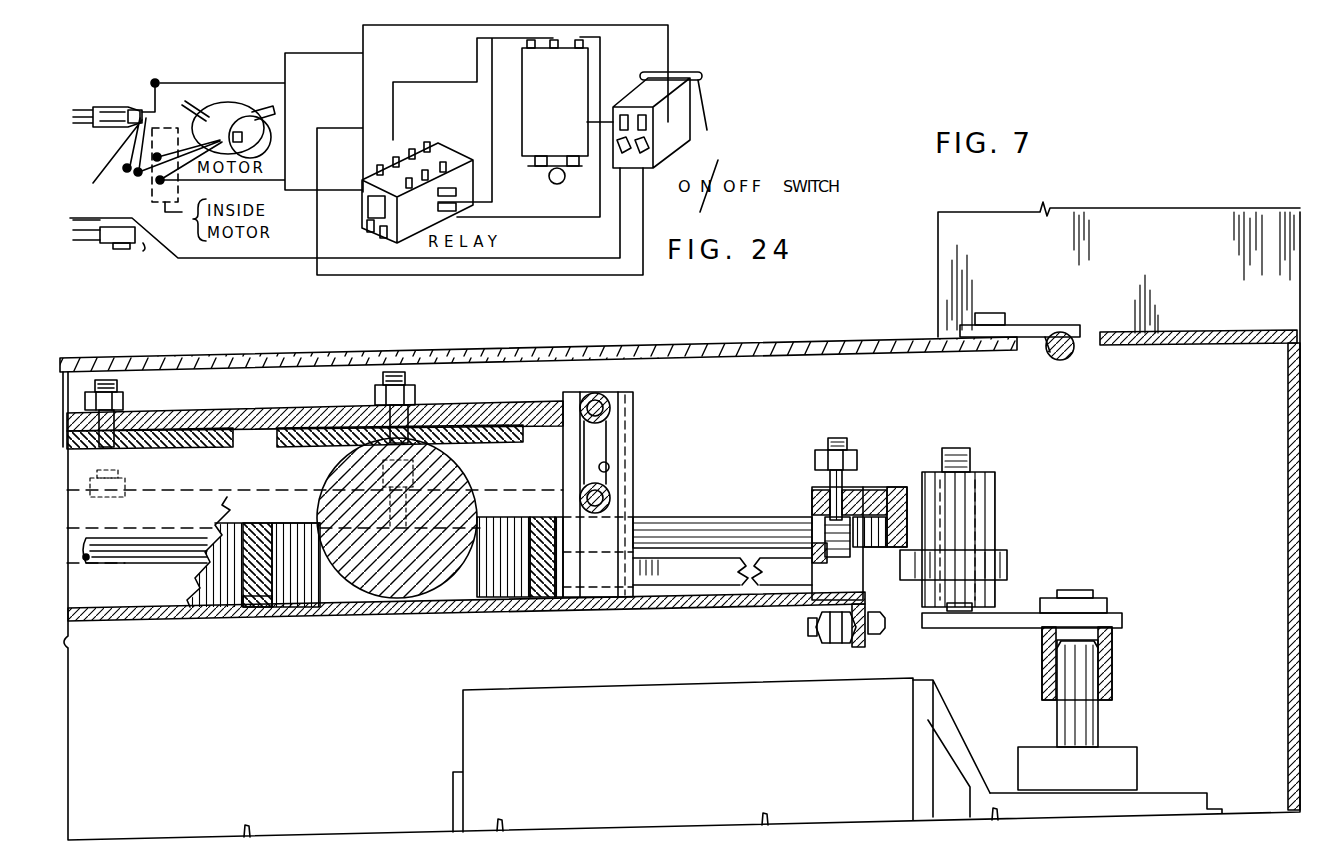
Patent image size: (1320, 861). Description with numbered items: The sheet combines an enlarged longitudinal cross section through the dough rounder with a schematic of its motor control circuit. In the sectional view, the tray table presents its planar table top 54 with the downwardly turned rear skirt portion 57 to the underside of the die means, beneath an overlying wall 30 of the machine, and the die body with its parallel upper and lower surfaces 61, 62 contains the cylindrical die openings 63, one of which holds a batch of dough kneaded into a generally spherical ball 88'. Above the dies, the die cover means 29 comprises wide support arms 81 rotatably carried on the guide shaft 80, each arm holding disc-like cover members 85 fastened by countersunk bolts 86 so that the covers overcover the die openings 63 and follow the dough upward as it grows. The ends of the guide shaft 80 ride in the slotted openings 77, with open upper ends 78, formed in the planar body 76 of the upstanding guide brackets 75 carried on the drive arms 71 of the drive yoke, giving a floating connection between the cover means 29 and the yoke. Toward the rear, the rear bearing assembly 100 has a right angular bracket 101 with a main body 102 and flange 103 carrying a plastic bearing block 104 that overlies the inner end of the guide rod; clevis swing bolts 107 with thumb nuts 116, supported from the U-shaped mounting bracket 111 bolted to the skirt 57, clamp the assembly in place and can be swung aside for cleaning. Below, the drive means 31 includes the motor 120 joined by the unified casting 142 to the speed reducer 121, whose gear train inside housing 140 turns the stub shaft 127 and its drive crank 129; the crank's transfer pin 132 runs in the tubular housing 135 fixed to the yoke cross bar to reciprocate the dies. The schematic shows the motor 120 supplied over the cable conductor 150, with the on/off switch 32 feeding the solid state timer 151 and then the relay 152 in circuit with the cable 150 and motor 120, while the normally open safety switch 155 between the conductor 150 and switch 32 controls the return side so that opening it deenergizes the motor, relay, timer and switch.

In FIG. 24, the cable conductor 150 is at (112, 97).
In FIG. 24, the motor 120 is at (213, 95).
In FIG. 7, the motor 120 is at (462, 727).
In FIG. 24, the solid state timer 151 is at (588, 58).
In FIG. 24, the relay 152 is at (459, 113).
In FIG. 24, the on/off switch 32 is at (702, 102).
In FIG. 24, the safety switch 155 is at (102, 249).
In FIG. 7, the housing top wall 30 is at (385, 345).
In FIG. 7, the die cover means 29 is at (325, 385).
In FIG. 7, the bolt 86 is at (123, 396).
In FIG. 7, the support arm 81 is at (250, 411).
In FIG. 7, the cover member 85 is at (152, 448).
In FIG. 7, the dough ball 88' is at (416, 518).
In FIG. 7, the upper surface 61 is at (251, 523).
In FIG. 7, the lower surface 62 is at (257, 608).
In FIG. 7, the die opening 63 is at (240, 585).
In FIG. 7, the table top 54 is at (660, 598).
In FIG. 7, the open upper end 78 is at (607, 392).
In FIG. 7, the guide shaft 80 is at (633, 410).
In FIG. 7, the planar body 76 is at (623, 441).
In FIG. 7, the slotted opening 77 is at (612, 467).
In FIG. 7, the guide bracket 75 is at (633, 478).
In FIG. 7, the drive arm 71 is at (743, 576).
In FIG. 7, the rear bearing assembly 100 is at (852, 487).
In FIG. 7, the clevis swing bolt 107 is at (837, 440).
In FIG. 7, the thumb nut 116 is at (853, 448).
In FIG. 7, the bracket 101 is at (866, 478).
In FIG. 7, the flange 103 is at (907, 486).
In FIG. 7, the main body 102 is at (812, 494).
In FIG. 7, the bearing block 104 is at (812, 508).
In FIG. 7, the transfer pin 132 is at (975, 454).
In FIG. 7, the tubular housing 135 is at (1000, 521).
In FIG. 7, the mounting bracket 111 is at (858, 580).
In FIG. 7, the rear skirt portion 57 is at (853, 650).
In FIG. 7, the drive crank 129 is at (1127, 614).
In FIG. 7, the drive means 31 is at (1117, 664).
In FIG. 7, the unified casting 142 is at (955, 734).
In FIG. 7, the stub shaft 127 is at (1102, 718).
In FIG. 7, the housing 140 is at (1138, 754).
In FIG. 7, the speed reducer 121 is at (1173, 784).